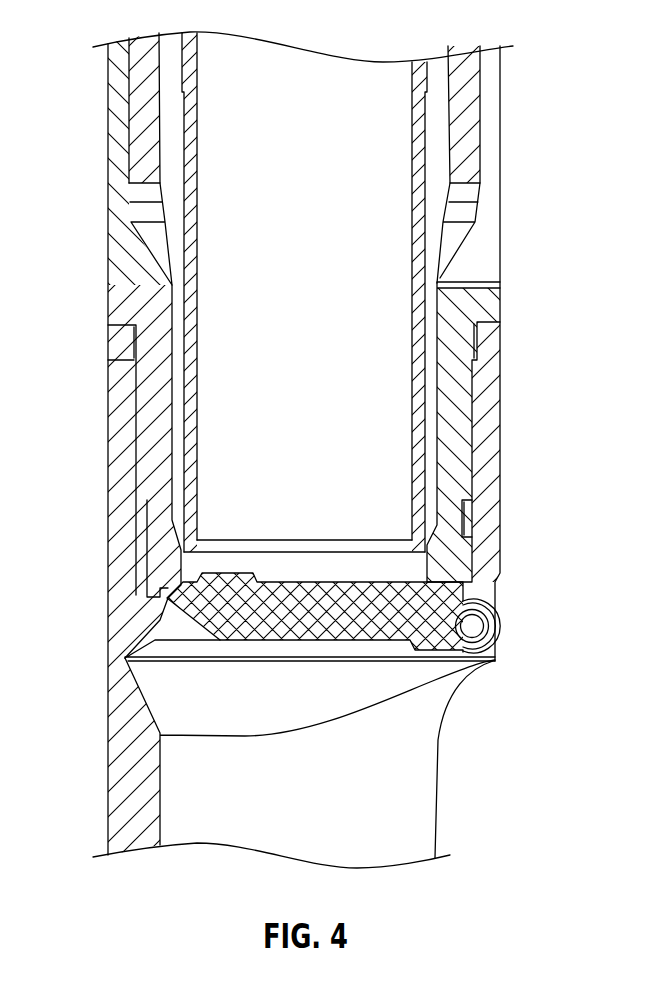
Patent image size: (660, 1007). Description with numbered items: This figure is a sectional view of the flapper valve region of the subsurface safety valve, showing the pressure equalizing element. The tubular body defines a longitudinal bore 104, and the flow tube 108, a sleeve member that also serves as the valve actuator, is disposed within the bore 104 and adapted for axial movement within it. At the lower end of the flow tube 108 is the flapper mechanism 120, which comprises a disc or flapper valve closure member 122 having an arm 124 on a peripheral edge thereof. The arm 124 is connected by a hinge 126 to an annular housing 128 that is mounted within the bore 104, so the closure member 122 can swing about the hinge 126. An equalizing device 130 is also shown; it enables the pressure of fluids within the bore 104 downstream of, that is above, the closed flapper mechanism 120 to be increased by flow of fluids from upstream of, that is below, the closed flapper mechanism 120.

The longitudinal bore 104 is at (372, 266).
The flow tube 108 is at (415, 488).
The flapper mechanism 120 is at (330, 503).
The flapper valve closure member 122 is at (165, 600).
The arm 124 is at (438, 642).
The hinge 126 is at (480, 628).
The annular housing 128 is at (137, 585).
The equalizing device 130 is at (480, 288).